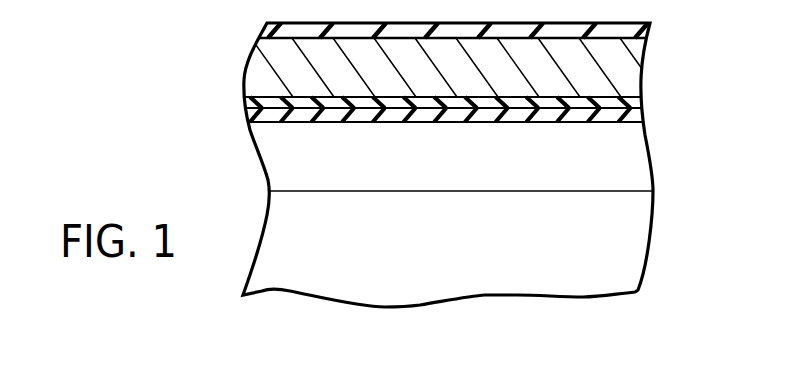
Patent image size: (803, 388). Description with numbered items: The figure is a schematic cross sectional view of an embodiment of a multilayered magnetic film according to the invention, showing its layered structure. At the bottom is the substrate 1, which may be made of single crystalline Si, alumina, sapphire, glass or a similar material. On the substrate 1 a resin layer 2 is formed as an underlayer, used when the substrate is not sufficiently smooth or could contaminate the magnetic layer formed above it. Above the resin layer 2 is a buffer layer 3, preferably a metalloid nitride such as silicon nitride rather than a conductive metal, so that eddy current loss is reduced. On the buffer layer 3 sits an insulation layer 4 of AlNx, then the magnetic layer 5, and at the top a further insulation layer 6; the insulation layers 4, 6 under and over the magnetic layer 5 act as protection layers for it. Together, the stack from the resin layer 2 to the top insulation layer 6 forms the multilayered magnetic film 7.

The substrate 1 is at (637, 258).
The resin layer 2 is at (643, 168).
The buffer layer 3 is at (633, 117).
The insulation layer 4 is at (637, 107).
The magnetic layer 5 is at (630, 72).
The insulation layer 6 is at (643, 28).
The multilayered magnetic film 7 is at (444, 100).